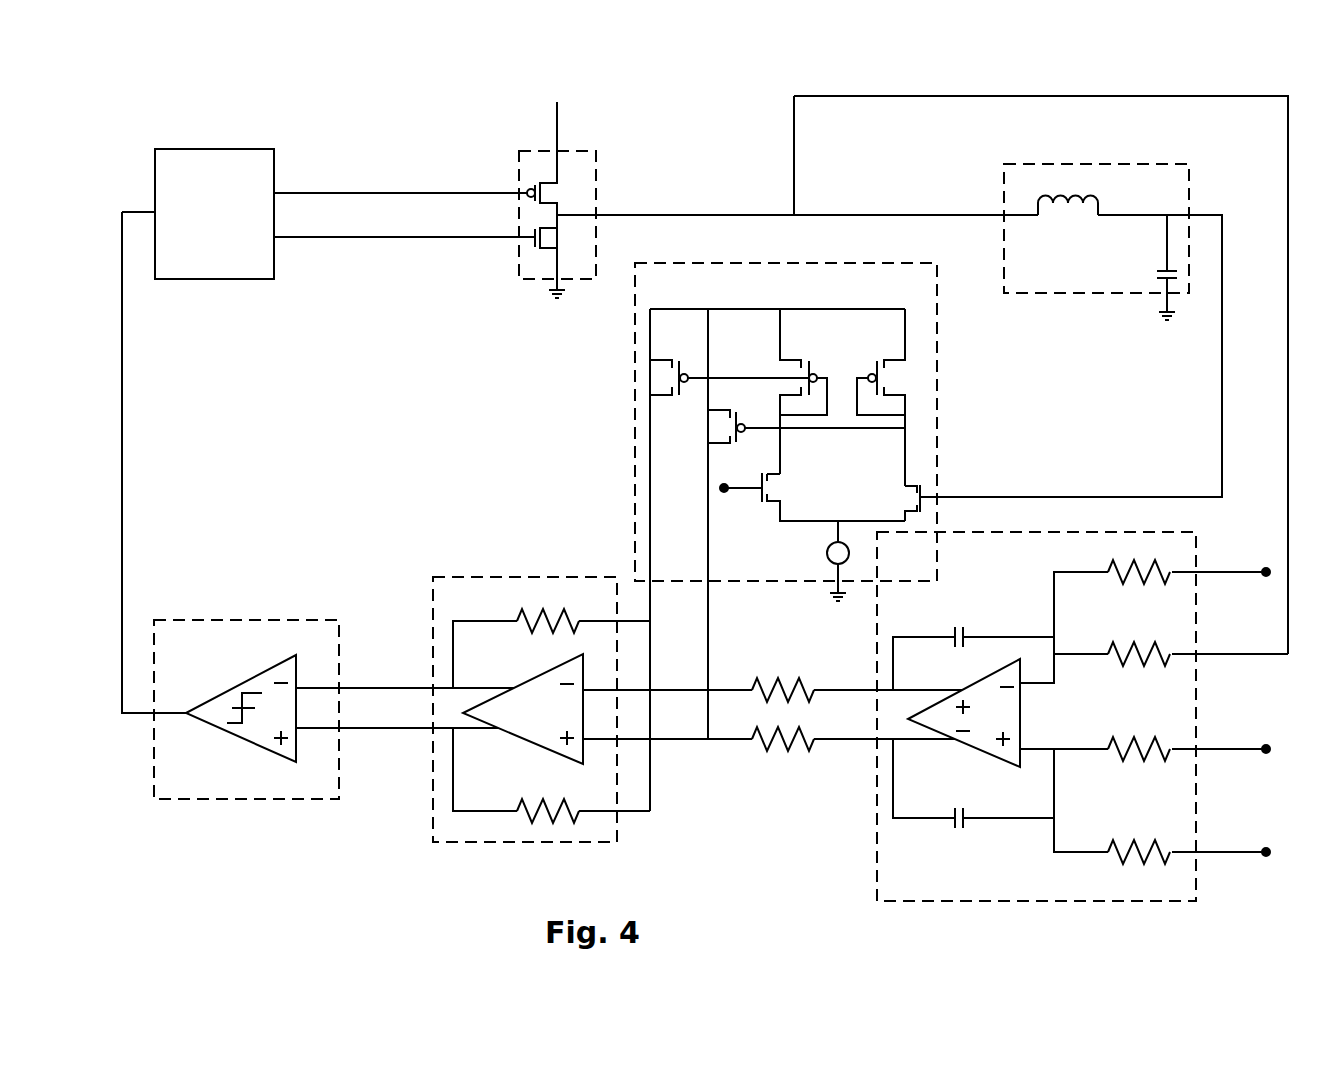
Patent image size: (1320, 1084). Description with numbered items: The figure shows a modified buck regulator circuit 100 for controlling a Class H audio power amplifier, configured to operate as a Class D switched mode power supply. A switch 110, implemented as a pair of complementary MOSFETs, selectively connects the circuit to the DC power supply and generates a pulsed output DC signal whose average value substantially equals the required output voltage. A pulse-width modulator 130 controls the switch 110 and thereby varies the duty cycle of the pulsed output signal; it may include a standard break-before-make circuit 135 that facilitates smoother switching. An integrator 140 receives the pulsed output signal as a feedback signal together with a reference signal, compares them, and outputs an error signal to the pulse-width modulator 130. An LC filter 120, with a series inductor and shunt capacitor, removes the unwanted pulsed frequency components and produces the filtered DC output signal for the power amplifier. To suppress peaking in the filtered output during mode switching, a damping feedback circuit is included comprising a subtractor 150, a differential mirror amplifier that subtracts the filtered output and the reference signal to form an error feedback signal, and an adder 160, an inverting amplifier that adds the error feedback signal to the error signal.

The modified buck regulator circuit 100 is at (380, 128).
The switch 110 is at (519, 165).
The LC filter 120 is at (1063, 295).
The pulse-width modulator 130 is at (243, 620).
The break-before-make circuit 135 is at (244, 148).
The integrator 140 is at (877, 855).
The subtractor 150 is at (937, 392).
The adder 160 is at (492, 577).